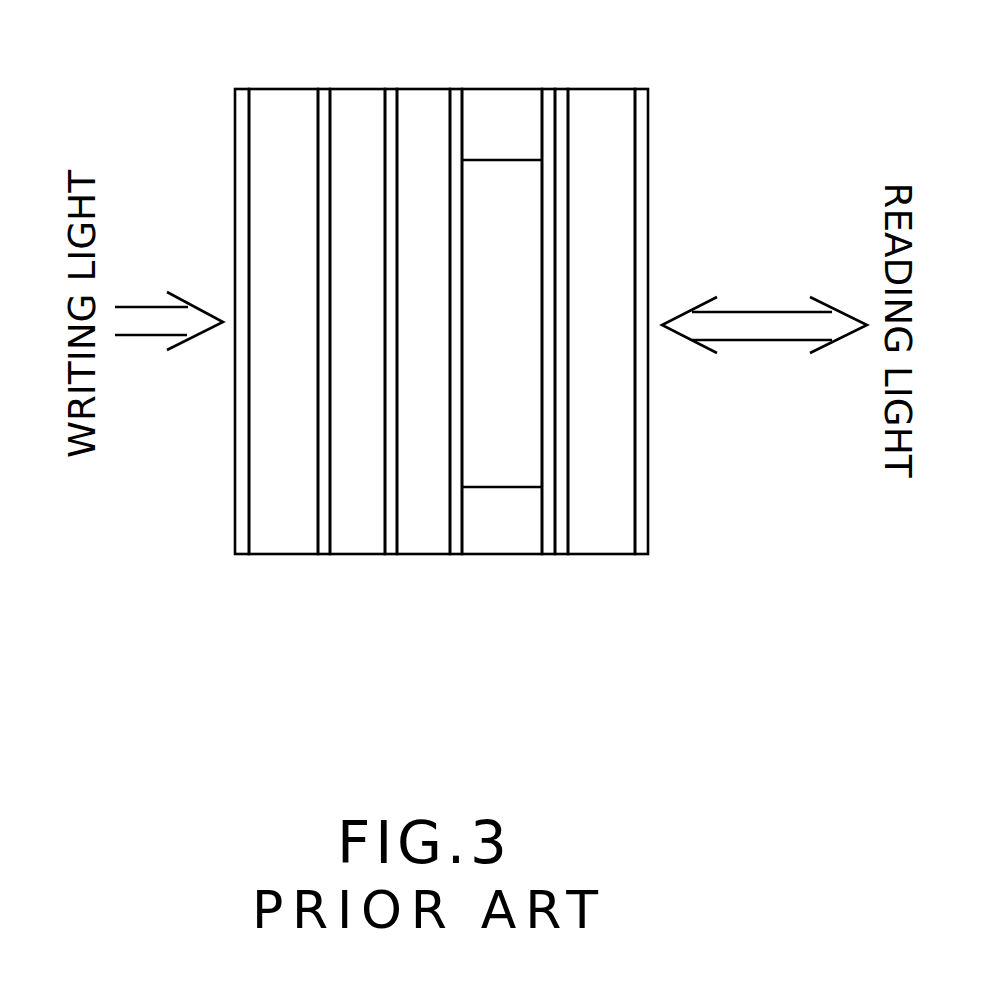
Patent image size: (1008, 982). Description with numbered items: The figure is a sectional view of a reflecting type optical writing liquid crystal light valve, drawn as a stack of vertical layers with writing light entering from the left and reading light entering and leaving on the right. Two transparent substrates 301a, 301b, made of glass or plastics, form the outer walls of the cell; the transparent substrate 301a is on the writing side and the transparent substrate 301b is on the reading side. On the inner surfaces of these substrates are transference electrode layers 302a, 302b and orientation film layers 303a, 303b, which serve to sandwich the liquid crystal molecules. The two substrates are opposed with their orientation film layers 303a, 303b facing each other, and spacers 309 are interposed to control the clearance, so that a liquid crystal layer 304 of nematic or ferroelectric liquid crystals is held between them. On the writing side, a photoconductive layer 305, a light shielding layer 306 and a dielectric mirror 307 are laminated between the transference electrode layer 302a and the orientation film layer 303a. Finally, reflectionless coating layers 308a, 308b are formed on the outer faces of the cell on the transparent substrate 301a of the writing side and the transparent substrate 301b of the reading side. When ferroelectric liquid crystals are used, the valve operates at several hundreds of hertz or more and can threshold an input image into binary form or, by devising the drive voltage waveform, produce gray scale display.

The transparent substrate 301a is at (272, 89).
The transparent substrate 301b is at (597, 554).
The transference electrode layer 302a is at (326, 89).
The transference electrode layer 302b is at (560, 89).
The orientation film layer 303a is at (453, 554).
The orientation film layer 303b is at (547, 554).
The liquid crystal layer 304 is at (493, 465).
The photoconductive layer 305 is at (358, 545).
The light shielding layer 306 is at (390, 554).
The dielectric mirror 307 is at (420, 89).
The reflectionless coating layer 308a is at (235, 554).
The reflectionless coating layer 308b is at (642, 89).
The spacer 309 is at (493, 120).